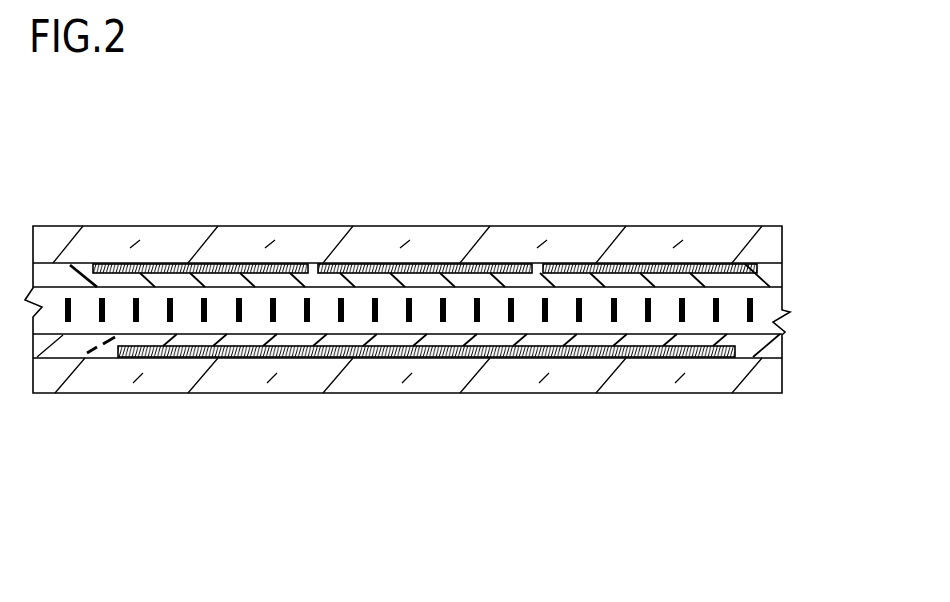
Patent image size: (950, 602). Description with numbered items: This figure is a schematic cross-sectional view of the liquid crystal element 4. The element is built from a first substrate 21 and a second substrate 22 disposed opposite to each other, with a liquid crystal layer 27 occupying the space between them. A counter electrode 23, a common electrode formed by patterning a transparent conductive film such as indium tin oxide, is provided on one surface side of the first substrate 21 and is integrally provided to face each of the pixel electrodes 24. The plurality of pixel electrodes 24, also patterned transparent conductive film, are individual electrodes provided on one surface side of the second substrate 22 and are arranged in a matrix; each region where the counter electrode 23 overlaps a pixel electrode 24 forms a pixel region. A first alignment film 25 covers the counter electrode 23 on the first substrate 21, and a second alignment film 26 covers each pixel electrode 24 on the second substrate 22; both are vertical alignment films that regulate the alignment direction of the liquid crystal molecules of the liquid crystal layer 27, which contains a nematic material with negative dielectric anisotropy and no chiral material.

The liquid crystal element 4 is at (439, 568).
The first substrate 21 is at (782, 377).
The second substrate 22 is at (782, 245).
The counter electrode 23 is at (320, 358).
The pixel electrodes 24 is at (237, 264).
The first alignment film 25 is at (782, 350).
The second alignment film 26 is at (782, 275).
The liquid crystal layer 27 is at (790, 312).